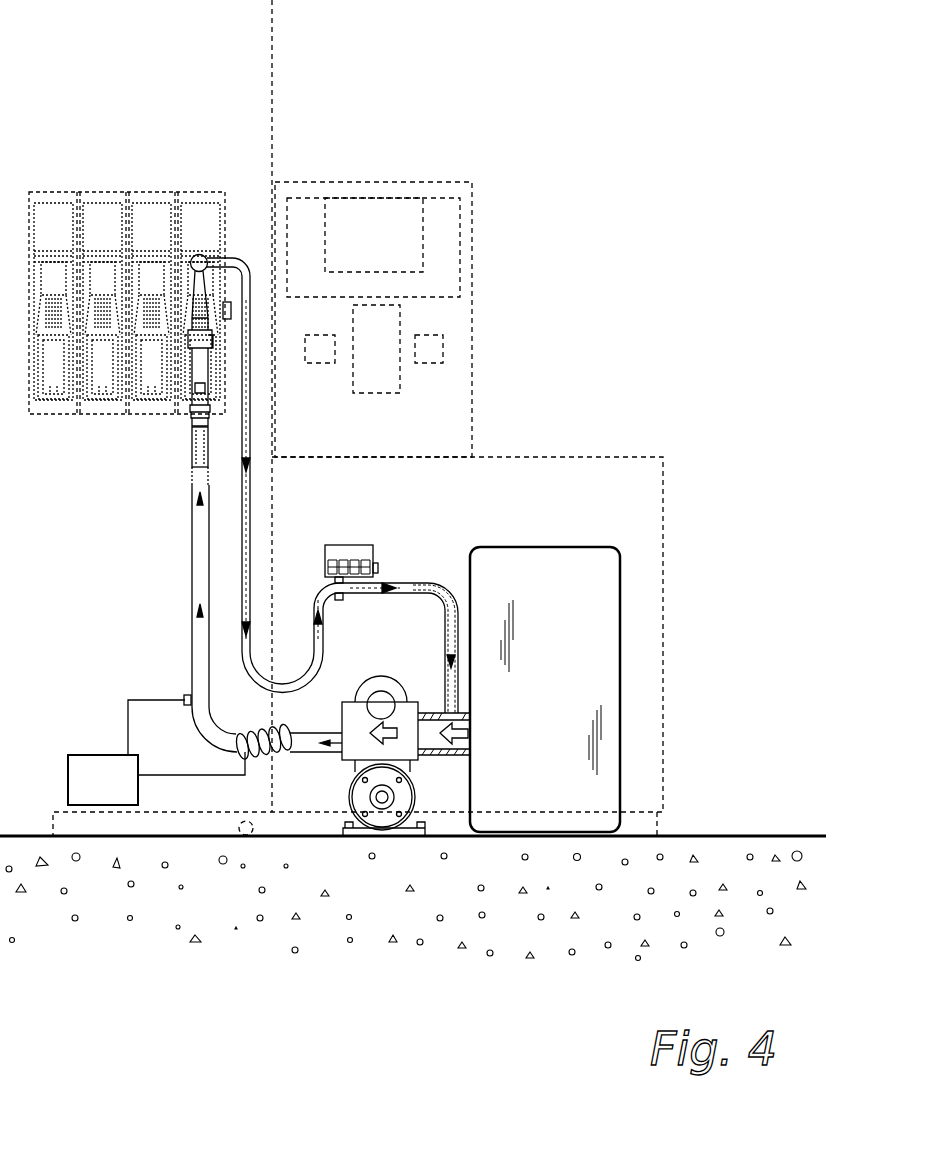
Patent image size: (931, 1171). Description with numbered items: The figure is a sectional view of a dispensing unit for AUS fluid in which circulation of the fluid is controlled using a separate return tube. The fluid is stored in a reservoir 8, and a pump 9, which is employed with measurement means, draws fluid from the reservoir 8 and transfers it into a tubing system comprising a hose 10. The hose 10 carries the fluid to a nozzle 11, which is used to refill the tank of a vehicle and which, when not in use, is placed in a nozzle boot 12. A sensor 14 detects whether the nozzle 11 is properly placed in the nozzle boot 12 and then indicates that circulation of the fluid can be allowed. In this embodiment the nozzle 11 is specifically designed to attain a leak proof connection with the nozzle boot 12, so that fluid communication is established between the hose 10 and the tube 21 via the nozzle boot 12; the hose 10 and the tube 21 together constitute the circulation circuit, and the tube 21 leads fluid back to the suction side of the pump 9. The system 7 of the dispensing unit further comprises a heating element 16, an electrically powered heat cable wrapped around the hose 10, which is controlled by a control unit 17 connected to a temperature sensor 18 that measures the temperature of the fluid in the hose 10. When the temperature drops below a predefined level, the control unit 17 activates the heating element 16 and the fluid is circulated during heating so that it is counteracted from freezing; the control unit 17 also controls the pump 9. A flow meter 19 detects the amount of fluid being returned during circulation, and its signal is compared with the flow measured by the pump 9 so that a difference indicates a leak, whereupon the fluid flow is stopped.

The system 7 is at (430, 530).
The reservoir 8 is at (620, 622).
The pump 9 is at (352, 760).
The hose 10 is at (192, 558).
The nozzle 11 is at (212, 346).
The nozzle boot 12 is at (196, 192).
The sensor 14 is at (230, 312).
The heating element 16 is at (262, 755).
The control unit 17 is at (90, 755).
The temperature sensor 18 is at (184, 700).
The flow meter 19 is at (362, 545).
The tube 21 is at (247, 262).